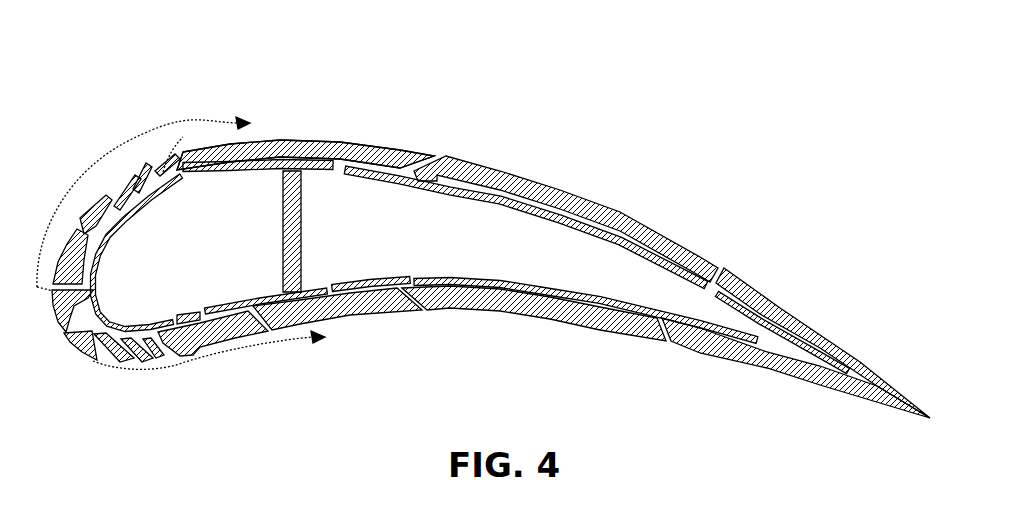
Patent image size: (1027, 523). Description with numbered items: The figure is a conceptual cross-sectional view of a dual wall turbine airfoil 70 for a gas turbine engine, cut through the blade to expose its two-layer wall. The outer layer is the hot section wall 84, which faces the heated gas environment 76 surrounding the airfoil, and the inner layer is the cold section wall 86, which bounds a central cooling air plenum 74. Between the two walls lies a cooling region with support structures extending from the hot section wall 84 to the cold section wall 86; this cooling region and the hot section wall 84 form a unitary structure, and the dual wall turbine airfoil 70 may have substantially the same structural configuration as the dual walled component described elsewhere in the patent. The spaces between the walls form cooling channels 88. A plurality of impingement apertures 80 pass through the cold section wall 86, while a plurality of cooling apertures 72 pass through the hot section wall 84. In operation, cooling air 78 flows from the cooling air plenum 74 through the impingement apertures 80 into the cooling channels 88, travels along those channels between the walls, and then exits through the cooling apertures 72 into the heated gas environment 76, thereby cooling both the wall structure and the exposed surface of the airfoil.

The dual wall turbine airfoil 70 is at (163, 70).
The cooling apertures 72 is at (140, 176).
The cooling air plenum 74 is at (237, 276).
The heated gas environment 76 is at (57, 146).
The cooling air 78 is at (244, 221).
The impingement apertures 80 is at (106, 232).
The hot section wall 84 is at (284, 142).
The cold section wall 86 is at (208, 174).
The cooling channels 88 is at (167, 186).